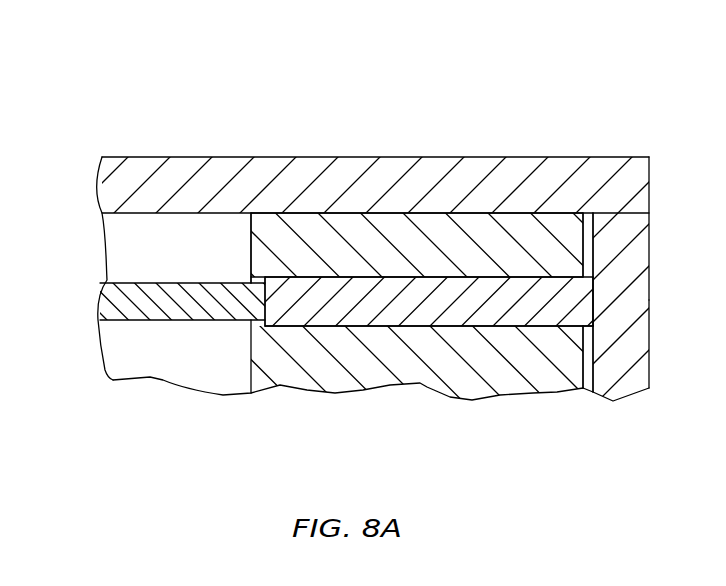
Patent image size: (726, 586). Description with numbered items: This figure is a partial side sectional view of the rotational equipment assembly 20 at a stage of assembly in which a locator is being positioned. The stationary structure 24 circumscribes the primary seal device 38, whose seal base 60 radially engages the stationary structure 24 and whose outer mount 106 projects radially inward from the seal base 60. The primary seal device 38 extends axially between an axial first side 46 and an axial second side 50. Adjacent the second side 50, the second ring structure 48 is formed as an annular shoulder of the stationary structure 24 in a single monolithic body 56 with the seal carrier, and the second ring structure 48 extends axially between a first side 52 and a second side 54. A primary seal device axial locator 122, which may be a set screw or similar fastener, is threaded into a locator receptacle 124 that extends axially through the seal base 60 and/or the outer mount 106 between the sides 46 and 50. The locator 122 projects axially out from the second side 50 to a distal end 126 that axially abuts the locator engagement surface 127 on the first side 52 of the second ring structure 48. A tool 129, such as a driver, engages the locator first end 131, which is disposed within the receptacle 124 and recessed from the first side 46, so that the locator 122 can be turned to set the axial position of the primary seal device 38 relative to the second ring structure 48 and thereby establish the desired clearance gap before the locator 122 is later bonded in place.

The assembly for rotational equipment 20 is at (658, 96).
The stationary structure 24 is at (141, 148).
The primary seal device 38 is at (440, 204).
The axial first side 46 is at (250, 255).
The second ring structure 48 is at (621, 412).
The axial second side 50 is at (593, 252).
The first side 52 is at (567, 400).
The second side 54 is at (650, 370).
The monolithic body 56 is at (664, 184).
The seal base 60 is at (342, 212).
The outer mount 106 is at (305, 390).
The primary seal device axial locator 122 is at (441, 345).
The locator receptacle 124 is at (497, 345).
The distal end 126 is at (593, 302).
The locator engagement surface 127 is at (586, 374).
The tool 129 is at (137, 320).
The locator first end 131 is at (262, 310).